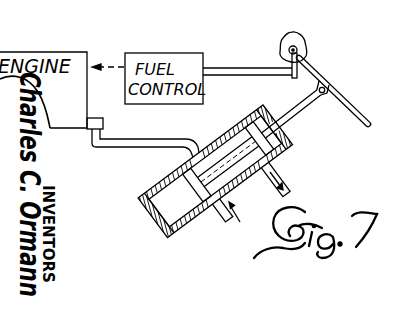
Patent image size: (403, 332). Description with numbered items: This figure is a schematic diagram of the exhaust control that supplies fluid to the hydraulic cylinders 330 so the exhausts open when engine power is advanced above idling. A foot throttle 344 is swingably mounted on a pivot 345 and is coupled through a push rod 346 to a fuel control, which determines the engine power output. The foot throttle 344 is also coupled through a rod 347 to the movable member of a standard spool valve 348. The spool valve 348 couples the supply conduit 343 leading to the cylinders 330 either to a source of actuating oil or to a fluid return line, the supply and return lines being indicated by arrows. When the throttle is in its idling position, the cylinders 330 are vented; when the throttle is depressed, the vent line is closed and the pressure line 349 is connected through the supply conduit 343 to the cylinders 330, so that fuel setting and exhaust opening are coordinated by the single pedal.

The hydraulic cylinder 330 is at (103, 121).
The supply conduit 343 is at (113, 148).
The foot throttle 344 is at (357, 131).
The pivot 345 is at (306, 47).
The push rod 346 is at (266, 68).
The rod 347 is at (292, 113).
The spool valve 348 is at (259, 104).
The pressure line 349 is at (223, 222).